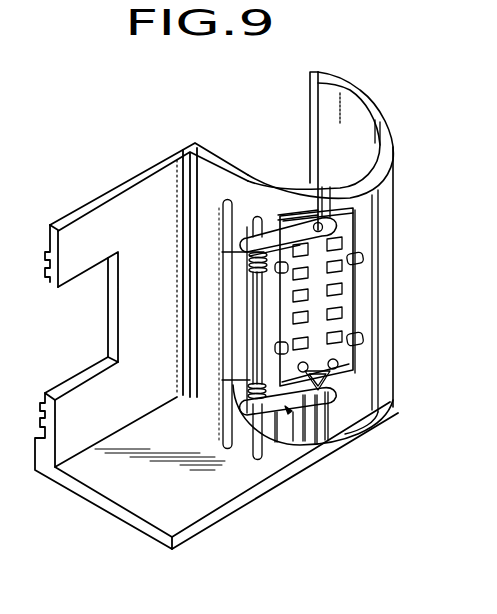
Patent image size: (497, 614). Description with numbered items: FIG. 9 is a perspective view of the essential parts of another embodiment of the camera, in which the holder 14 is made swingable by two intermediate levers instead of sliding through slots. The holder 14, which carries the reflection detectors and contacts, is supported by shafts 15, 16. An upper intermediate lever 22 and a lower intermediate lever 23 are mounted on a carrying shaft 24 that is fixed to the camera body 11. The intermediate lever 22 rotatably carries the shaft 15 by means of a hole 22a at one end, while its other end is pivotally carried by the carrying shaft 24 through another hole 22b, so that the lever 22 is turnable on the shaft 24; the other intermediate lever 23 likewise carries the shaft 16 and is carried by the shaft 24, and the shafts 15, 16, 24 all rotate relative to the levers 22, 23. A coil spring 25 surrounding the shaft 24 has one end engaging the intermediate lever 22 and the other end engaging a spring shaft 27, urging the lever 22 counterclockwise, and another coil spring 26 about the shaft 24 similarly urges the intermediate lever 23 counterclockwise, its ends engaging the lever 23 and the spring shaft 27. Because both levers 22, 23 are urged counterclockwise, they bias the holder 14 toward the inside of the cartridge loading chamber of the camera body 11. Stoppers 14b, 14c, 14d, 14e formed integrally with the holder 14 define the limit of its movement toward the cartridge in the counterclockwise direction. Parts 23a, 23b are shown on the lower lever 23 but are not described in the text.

The camera body 11 is at (76, 230).
The holder 14 is at (355, 378).
The stopper 14b is at (310, 296).
The stopper 14c is at (362, 257).
The stopper 14d is at (345, 327).
The stopper 14e is at (358, 370).
The shaft 15 is at (318, 183).
The shaft 16 is at (317, 410).
The intermediate lever 22 is at (276, 232).
The hole 22a is at (332, 227).
The hole 22b is at (252, 225).
The intermediate lever 23 is at (283, 420).
The retaining clip 23a is at (328, 395).
The tab 23b is at (272, 420).
The carrying shaft 24 is at (253, 458).
The coil spring 25 is at (228, 252).
The coil spring 26 is at (247, 415).
The spring shaft 27 is at (224, 444).